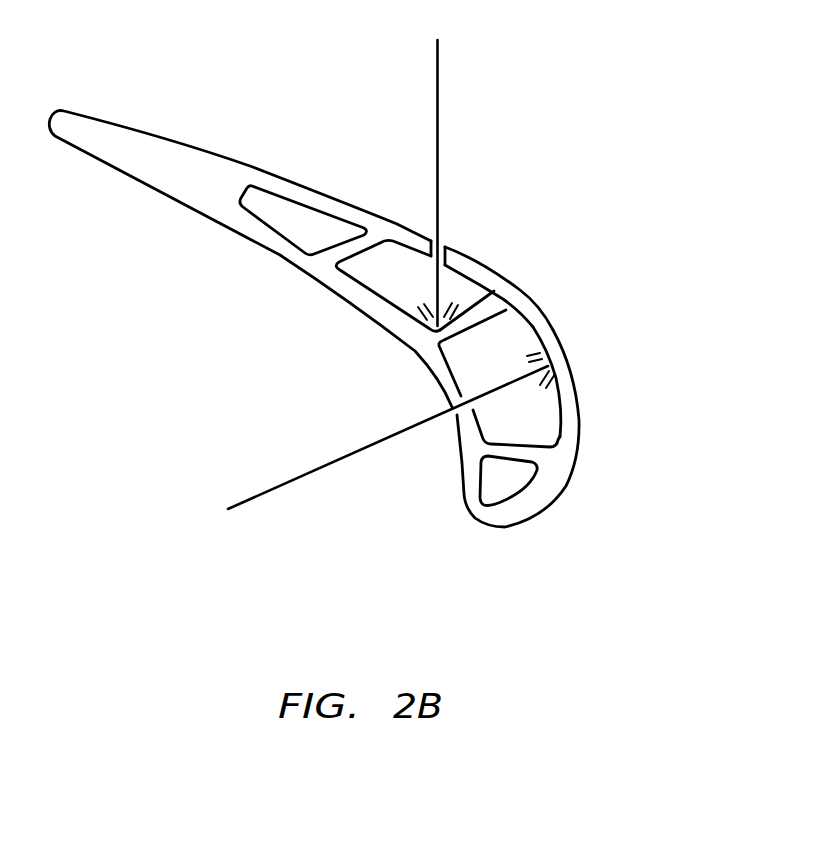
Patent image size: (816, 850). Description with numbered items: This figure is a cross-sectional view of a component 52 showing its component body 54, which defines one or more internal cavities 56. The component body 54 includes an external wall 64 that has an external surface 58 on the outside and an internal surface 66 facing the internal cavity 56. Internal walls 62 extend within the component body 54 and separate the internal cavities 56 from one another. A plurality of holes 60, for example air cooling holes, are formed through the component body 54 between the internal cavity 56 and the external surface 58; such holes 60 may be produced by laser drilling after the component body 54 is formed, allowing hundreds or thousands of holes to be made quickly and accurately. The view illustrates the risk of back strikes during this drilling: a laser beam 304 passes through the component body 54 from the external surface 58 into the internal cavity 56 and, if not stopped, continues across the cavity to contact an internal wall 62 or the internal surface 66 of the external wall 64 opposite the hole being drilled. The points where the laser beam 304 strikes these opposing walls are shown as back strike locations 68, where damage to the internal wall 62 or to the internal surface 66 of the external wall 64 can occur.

The component 52 is at (580, 81).
The component body 54 is at (503, 300).
The internal cavity 56 is at (378, 277).
The external surface 58 is at (478, 263).
The holes 60 is at (446, 238).
The internal wall 62 is at (472, 320).
The external wall 64 is at (567, 385).
The internal surface 66 is at (519, 344).
The back strike locations 68 is at (420, 304).
The laser beam 304 is at (437, 69).